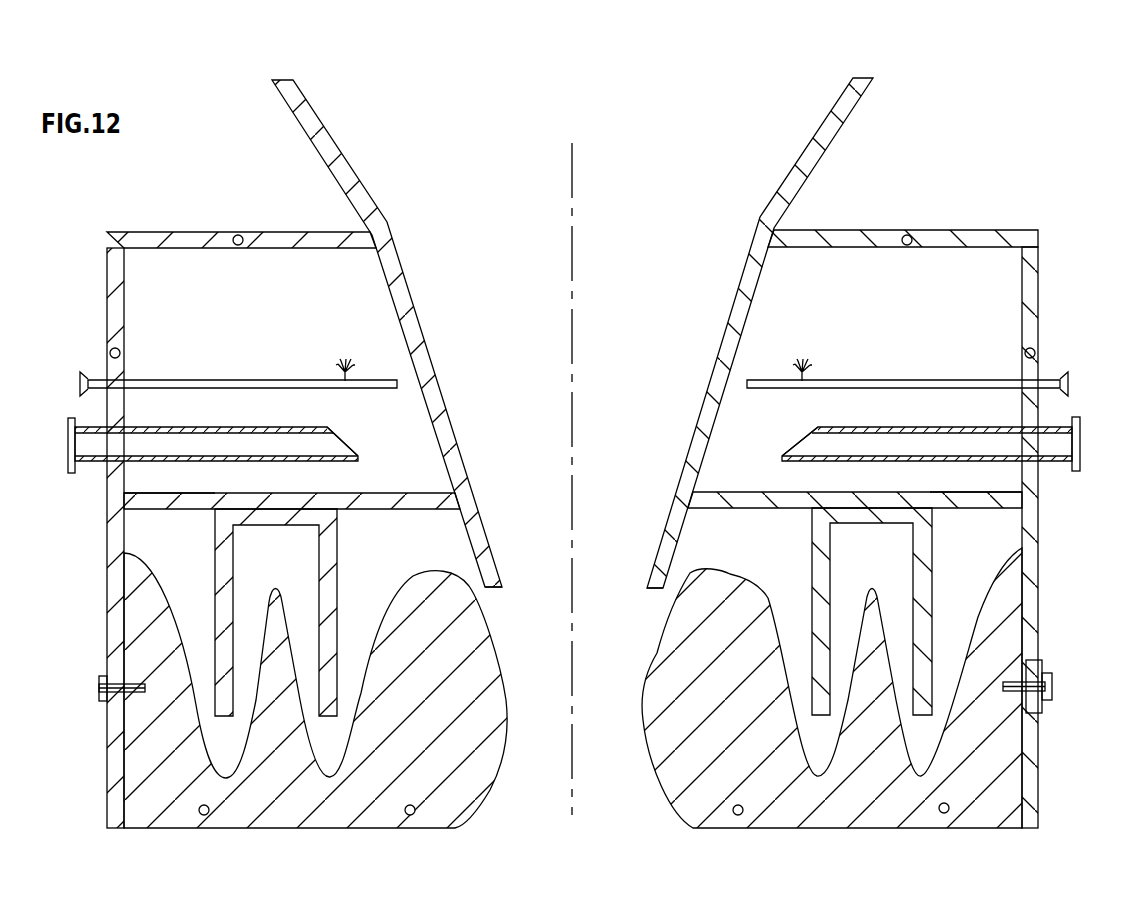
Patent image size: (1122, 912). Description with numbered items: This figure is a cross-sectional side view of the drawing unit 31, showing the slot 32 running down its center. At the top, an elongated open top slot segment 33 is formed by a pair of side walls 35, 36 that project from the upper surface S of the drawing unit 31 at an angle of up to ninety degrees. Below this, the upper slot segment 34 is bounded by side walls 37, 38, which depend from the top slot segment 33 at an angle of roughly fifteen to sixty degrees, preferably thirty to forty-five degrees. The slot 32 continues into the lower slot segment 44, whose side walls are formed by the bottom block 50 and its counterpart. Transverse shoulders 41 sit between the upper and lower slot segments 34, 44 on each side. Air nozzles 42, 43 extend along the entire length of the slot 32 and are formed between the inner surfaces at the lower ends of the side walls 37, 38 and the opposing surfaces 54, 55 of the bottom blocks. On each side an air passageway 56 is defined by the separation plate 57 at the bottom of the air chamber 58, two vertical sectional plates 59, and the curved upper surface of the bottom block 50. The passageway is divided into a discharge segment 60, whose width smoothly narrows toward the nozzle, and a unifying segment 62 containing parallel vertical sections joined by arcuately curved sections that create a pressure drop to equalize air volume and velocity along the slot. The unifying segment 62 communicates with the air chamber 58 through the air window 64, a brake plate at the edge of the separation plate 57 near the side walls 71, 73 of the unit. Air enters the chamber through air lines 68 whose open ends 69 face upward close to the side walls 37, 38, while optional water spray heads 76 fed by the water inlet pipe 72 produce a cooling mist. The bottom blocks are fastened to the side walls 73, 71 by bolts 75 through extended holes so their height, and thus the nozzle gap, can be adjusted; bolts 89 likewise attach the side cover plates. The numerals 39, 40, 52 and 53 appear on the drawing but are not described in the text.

The drawing unit 31 is at (1022, 157).
The slot 32 is at (660, 157).
The open top slot segment 33 is at (542, 210).
The upper slot segment 34 is at (502, 340).
The side wall 35 is at (309, 103).
The side wall 36 is at (857, 97).
The side wall 37 is at (432, 357).
The side wall 38 is at (717, 343).
The lobe surface 39 is at (492, 788).
The lobe 40 is at (672, 807).
The transverse shoulder 41 is at (494, 590).
The air nozzle 42 is at (670, 588).
The air nozzle 43 is at (473, 583).
The lower slot segment 44 is at (598, 795).
The bottom block 50 is at (880, 786).
The wall portion 52 is at (688, 523).
The wall portion 53 is at (468, 540).
The opposing surface of bottom block 54 is at (727, 575).
The opposing surface of bottom block 55 is at (450, 602).
The air passageway 56 is at (882, 556).
The separation plate 57 is at (380, 497).
The air chamber 58 is at (237, 301).
The vertical sectional plate 59 is at (830, 623).
The discharge segment 60 is at (430, 543).
The unifying segment 62 is at (187, 553).
The air window 64 is at (167, 497).
The air line 68 is at (197, 442).
The open end of air line 69 is at (343, 442).
The side wall of drawing unit 71 is at (1033, 757).
The water inlet pipe 72 is at (253, 380).
The side wall of drawing unit 73 is at (115, 777).
The bolt 75 is at (100, 690).
The water spray head 76 is at (342, 355).
The bolt 89 is at (238, 235).
The upper surface S is at (857, 228).